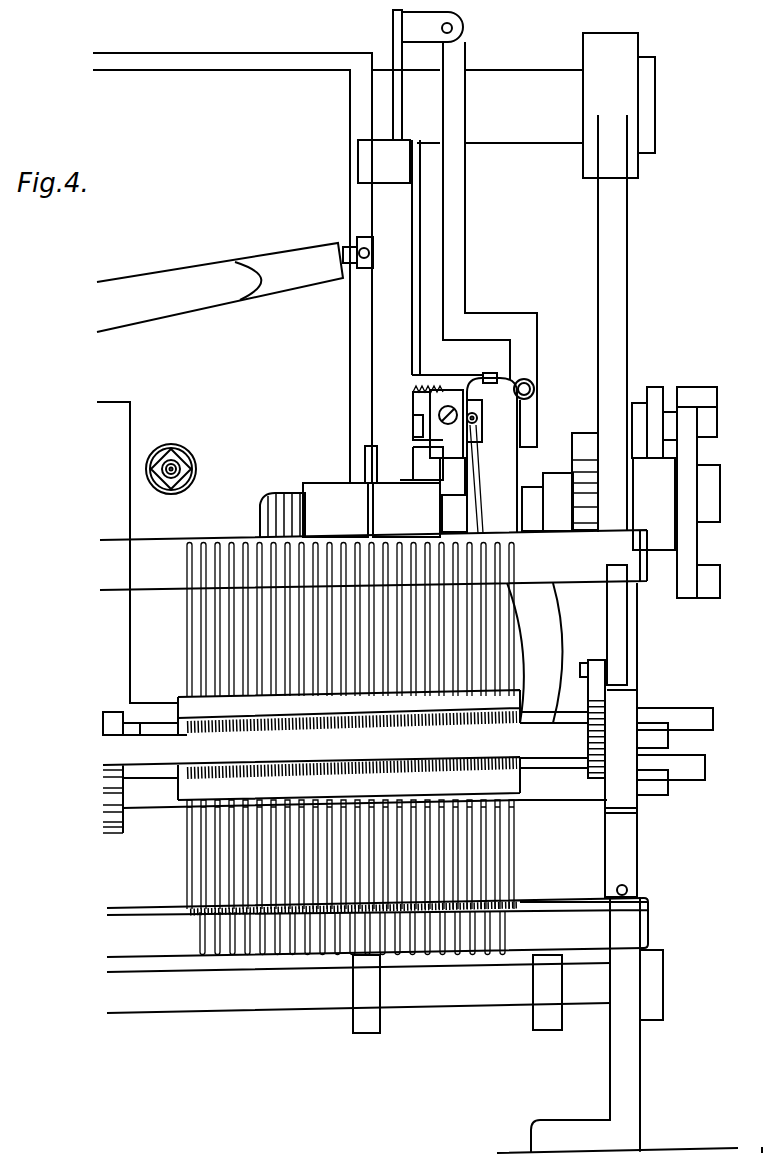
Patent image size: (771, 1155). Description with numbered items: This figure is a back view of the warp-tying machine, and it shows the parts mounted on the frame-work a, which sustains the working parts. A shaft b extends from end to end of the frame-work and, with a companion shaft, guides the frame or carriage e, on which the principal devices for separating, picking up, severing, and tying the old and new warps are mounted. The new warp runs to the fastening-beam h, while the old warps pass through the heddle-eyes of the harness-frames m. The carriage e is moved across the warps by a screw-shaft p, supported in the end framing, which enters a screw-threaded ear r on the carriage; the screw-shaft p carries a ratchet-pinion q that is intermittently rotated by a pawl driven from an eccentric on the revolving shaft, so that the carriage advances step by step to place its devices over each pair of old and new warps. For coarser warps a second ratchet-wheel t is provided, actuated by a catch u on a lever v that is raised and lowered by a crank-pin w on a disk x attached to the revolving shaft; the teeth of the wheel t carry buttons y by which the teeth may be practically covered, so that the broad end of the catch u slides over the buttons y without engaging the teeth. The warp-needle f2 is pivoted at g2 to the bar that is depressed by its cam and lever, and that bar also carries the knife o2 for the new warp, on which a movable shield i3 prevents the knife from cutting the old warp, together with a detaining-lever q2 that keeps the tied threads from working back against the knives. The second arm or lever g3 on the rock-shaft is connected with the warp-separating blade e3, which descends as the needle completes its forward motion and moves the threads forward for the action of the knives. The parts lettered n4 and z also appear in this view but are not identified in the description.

The frame-work a is at (619, 282).
The shaft b is at (478, 106).
The frame or carriage e is at (232, 268).
The warp-separating blade e3 is at (393, 46).
The warp-needle f2 is at (490, 244).
The pivot of the warp-needle g2 is at (453, 29).
The second arm or lever g3 is at (235, 284).
The fastening-beam h is at (349, 712).
The movable shield i3 is at (452, 476).
The harness-frames m is at (373, 560).
The lower beam n4 is at (358, 994).
The knife for the new warp o2 is at (454, 513).
The screw-shaft p is at (533, 473).
The ratchet-pinion q is at (573, 503).
The detaining-lever q2 is at (515, 550).
The screw-threaded ear r is at (489, 504).
The second ratchet-wheel t is at (687, 502).
The catch u is at (697, 397).
The lever v is at (655, 414).
The crank-pin w is at (670, 412).
The disk x is at (638, 424).
The buttons y is at (713, 502).
The ratchet box z is at (585, 481).